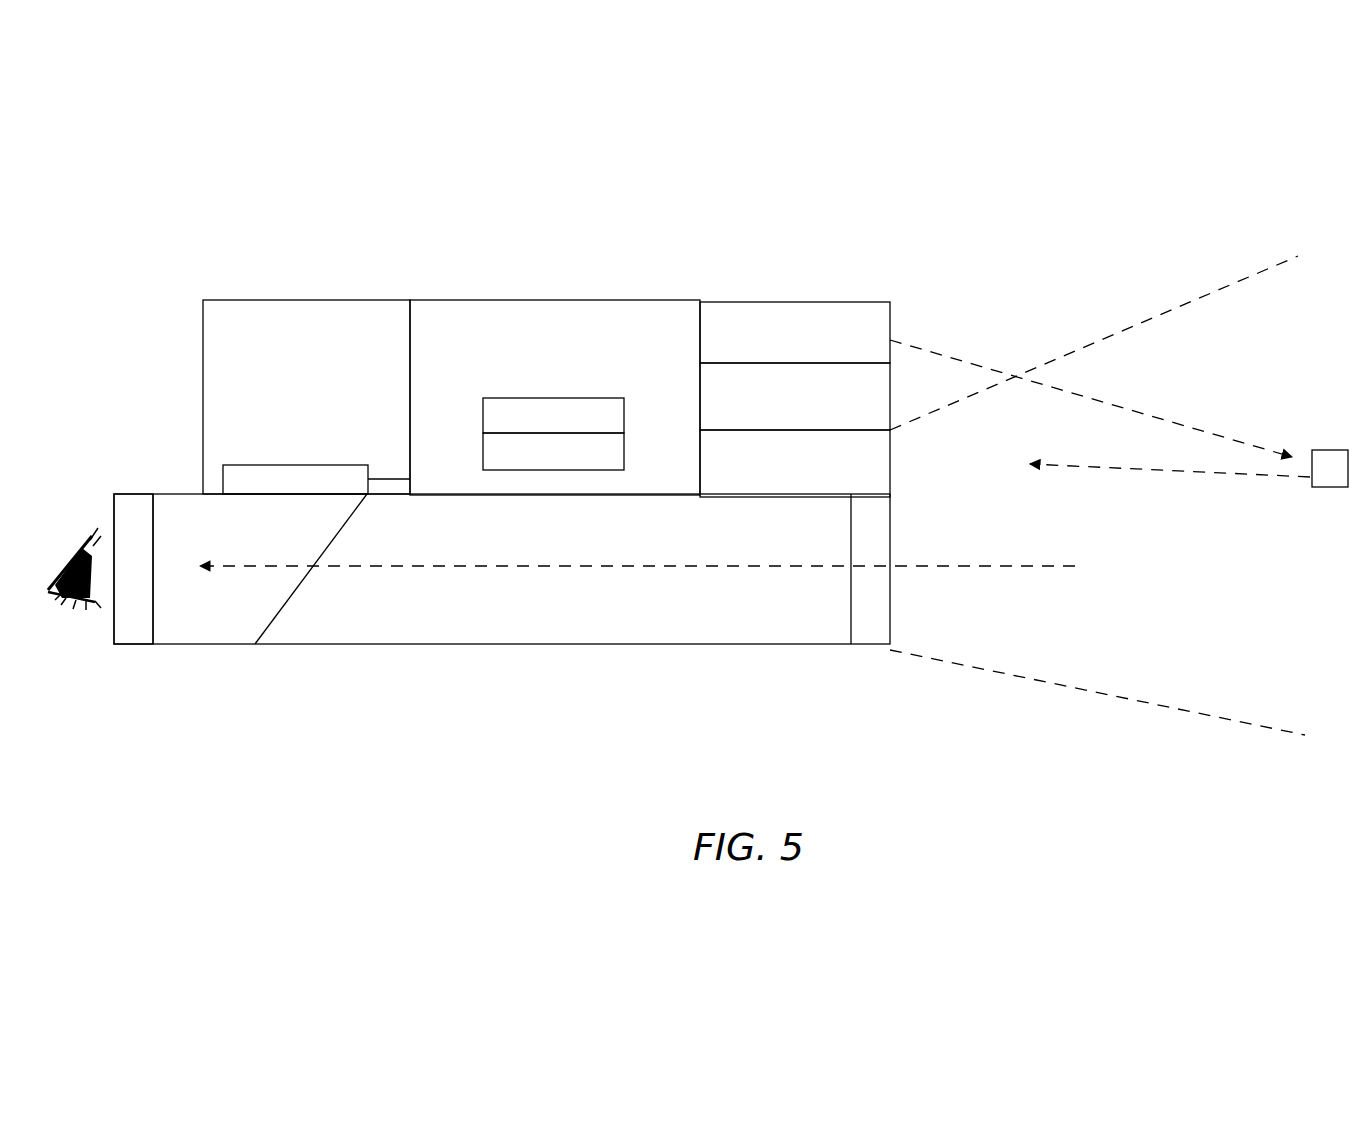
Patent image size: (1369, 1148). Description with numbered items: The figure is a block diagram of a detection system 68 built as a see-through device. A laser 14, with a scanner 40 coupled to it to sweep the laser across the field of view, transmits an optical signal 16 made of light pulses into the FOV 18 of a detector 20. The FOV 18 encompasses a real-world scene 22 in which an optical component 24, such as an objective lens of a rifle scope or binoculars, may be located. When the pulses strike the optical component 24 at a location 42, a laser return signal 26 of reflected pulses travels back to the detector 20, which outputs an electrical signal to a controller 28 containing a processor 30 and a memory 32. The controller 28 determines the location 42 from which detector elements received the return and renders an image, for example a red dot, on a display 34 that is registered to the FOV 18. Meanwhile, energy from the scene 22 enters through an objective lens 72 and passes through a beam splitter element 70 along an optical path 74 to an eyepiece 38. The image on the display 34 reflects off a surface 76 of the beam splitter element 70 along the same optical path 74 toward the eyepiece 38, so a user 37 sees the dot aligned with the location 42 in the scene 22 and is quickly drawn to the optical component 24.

The detection system 68 is at (872, 218).
The laser 14 is at (880, 321).
The scanner 40 is at (880, 387).
The detector 20 is at (832, 490).
The controller 28 is at (569, 375).
The processor 30 is at (483, 410).
The memory 32 is at (483, 447).
The optical signal 16 is at (987, 368).
The field of view 18 is at (1210, 293).
The location 42 is at (1340, 434).
The optical component 24 is at (1333, 489).
The laser return signal 26 is at (1125, 468).
The scene 22 is at (1205, 581).
The optical path 74 is at (655, 572).
The objective lens 72 is at (868, 640).
The beam splitter element 70 is at (275, 612).
The surface 76 is at (320, 537).
The display 34 is at (290, 477).
The eyepiece 38 is at (142, 637).
The user 37 is at (78, 545).